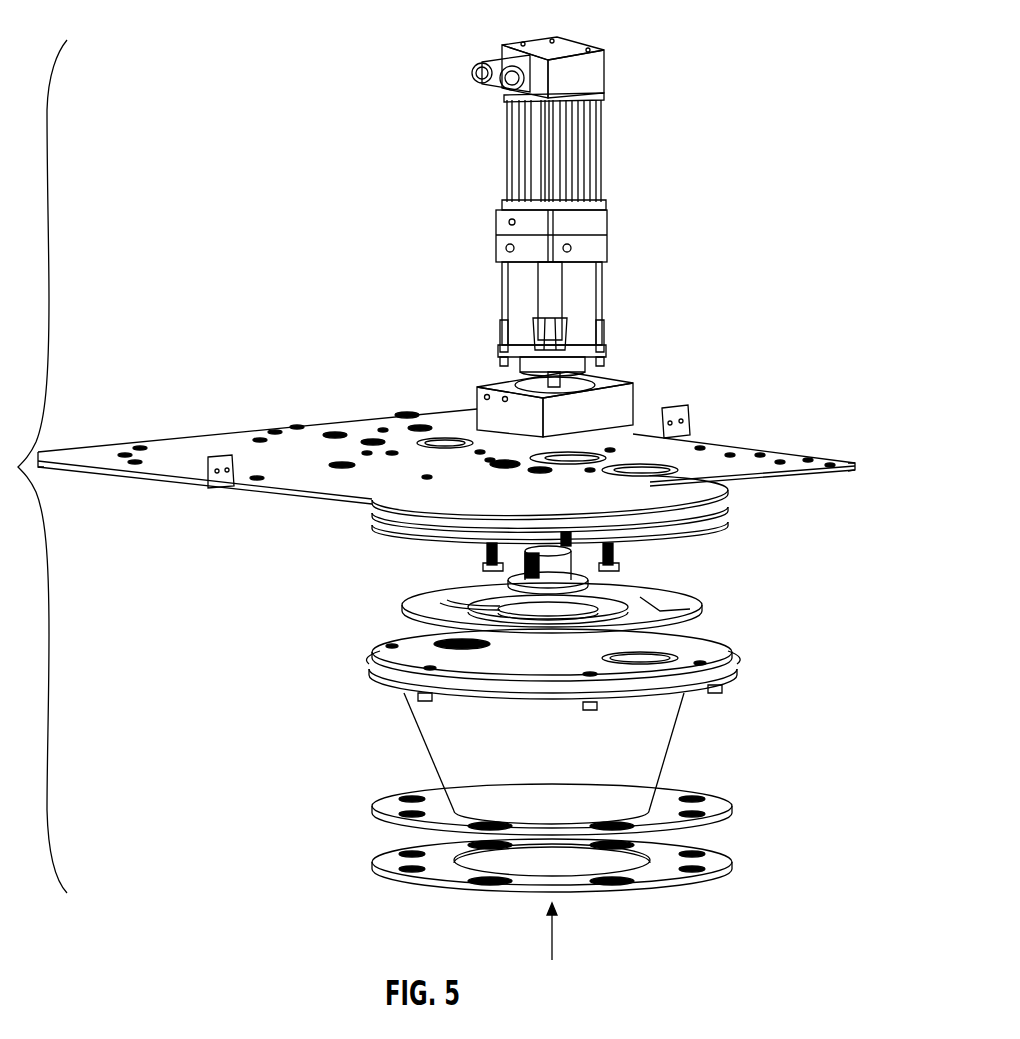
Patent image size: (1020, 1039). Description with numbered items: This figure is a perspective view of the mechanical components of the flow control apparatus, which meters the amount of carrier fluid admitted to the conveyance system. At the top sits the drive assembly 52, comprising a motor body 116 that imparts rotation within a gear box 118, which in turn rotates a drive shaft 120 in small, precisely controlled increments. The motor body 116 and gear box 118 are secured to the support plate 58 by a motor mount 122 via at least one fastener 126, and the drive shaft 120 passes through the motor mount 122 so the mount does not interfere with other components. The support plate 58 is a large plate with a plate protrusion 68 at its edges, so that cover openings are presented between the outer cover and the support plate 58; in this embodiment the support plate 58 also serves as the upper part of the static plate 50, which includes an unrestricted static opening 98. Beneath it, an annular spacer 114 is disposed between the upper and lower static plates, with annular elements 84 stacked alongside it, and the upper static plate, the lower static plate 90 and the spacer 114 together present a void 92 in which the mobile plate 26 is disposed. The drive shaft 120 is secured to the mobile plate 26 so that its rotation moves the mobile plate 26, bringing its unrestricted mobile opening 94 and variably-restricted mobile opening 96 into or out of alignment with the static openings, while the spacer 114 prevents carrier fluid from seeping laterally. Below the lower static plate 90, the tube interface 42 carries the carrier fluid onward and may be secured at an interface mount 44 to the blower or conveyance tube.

The drive assembly 52 is at (610, 26).
The motor body 116 is at (600, 127).
The gear box 118 is at (590, 276).
The fastener 126 is at (507, 333).
The drive shaft 120 is at (580, 386).
The motor mount 122 is at (633, 393).
The support plate 58 is at (172, 450).
The plate protrusion 68 is at (62, 452).
The static plate 50 is at (634, 451).
The unrestricted static opening 98 is at (477, 450).
The gasket ring 84 is at (729, 488).
The spacer 114 is at (729, 507).
The unrestricted mobile opening 94 is at (664, 608).
The mobile plate 26 is at (682, 615).
The variably-restricted mobile opening 96 is at (457, 610).
The void 92 is at (719, 564).
The lower static plate 90 is at (712, 653).
The tube interface 42 is at (687, 754).
The interface mount 44 is at (722, 808).